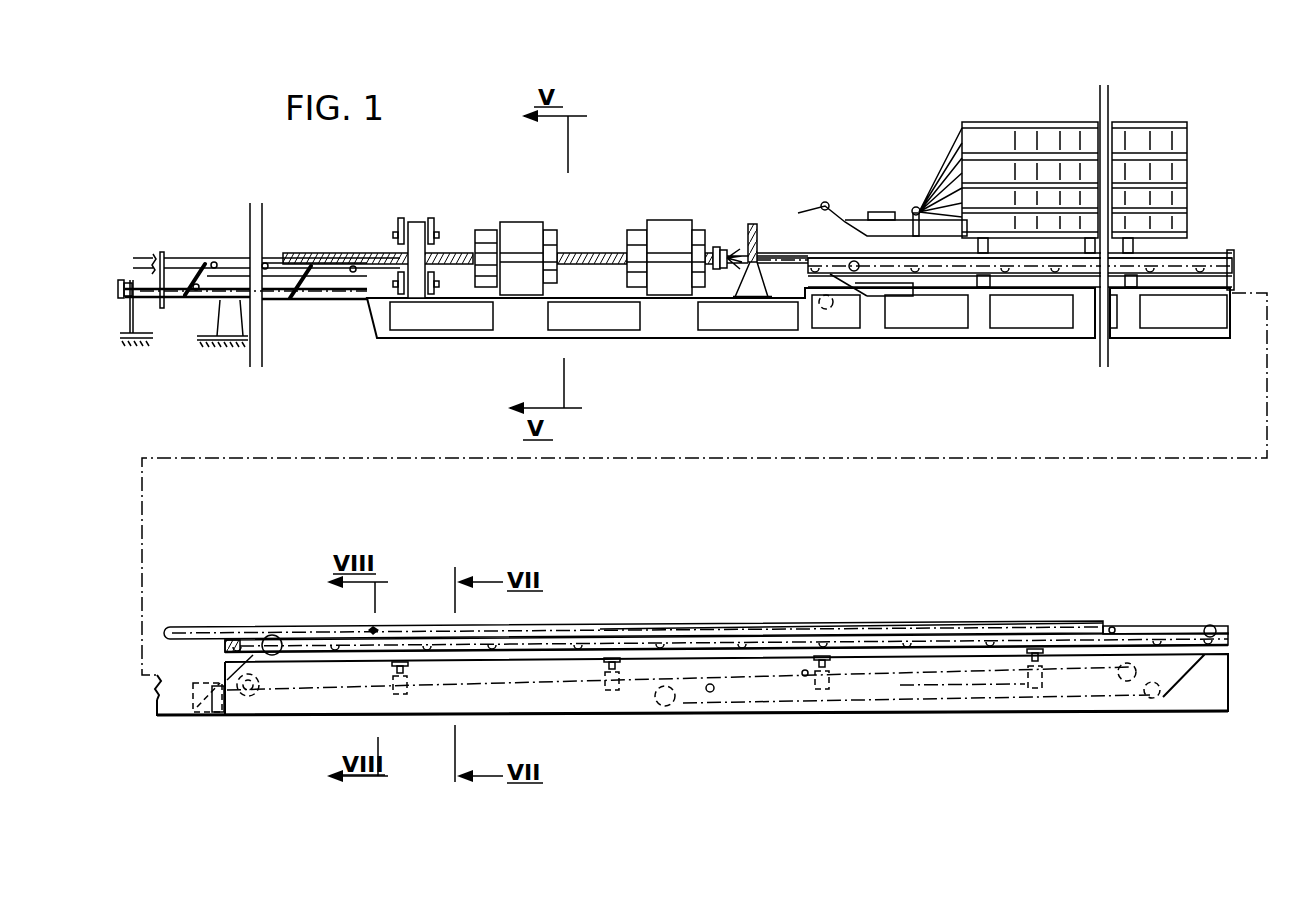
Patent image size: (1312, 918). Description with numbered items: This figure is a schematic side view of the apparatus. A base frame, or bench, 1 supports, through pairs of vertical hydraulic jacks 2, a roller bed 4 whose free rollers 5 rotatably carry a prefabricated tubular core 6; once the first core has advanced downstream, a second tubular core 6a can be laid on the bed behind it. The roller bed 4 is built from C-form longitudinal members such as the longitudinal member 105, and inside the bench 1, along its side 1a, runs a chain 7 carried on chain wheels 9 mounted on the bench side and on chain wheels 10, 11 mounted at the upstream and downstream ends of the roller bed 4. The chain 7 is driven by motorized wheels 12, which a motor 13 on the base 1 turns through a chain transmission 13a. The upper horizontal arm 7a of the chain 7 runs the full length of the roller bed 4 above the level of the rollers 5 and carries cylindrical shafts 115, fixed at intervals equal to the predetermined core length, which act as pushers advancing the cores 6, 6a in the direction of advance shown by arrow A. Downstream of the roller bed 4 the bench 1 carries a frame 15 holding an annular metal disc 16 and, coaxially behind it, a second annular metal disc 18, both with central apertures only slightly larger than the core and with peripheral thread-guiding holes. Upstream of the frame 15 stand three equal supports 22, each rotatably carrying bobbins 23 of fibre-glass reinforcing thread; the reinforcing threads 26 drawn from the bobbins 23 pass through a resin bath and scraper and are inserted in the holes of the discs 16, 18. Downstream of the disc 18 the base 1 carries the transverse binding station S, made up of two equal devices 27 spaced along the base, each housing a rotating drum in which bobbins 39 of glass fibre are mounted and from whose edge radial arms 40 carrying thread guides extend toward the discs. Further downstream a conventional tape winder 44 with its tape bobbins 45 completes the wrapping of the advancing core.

The base frame 1 is at (610, 348).
The side of the base frame 1a is at (524, 325).
The hydraulic jacks 2 is at (410, 676).
The roller bed 4 is at (1162, 273).
The rollers 5 is at (1052, 255).
The tubular core 6 is at (1208, 256).
The second tubular core 6a is at (850, 625).
The chain 7 is at (570, 685).
The upper horizontal arm of the chain 7a is at (682, 630).
The chain wheels 9 is at (665, 706).
The chain wheel 10 is at (1212, 630).
The chain wheel 11 is at (275, 636).
The motorized wheels 12 is at (245, 698).
The motor 13 is at (200, 712).
The chain transmission 13a is at (232, 700).
The frame 15 is at (752, 292).
The annular metal disc 16 is at (755, 225).
The second annular metal disc 18 is at (718, 247).
The support 22 is at (1119, 223).
The bobbins 23 is at (1003, 140).
The reinforcing threads 26 is at (802, 216).
The binding devices 27 is at (518, 283).
The bobbin 39 is at (488, 230).
The arms 40 is at (552, 240).
The tape winder 44 is at (416, 222).
The tape bobbins 45 is at (400, 217).
The longitudinal member 105 is at (628, 625).
The cylindrical shafts 115 is at (377, 630).
The transverse binding station S is at (617, 201).
The direction of advance A is at (370, 242).